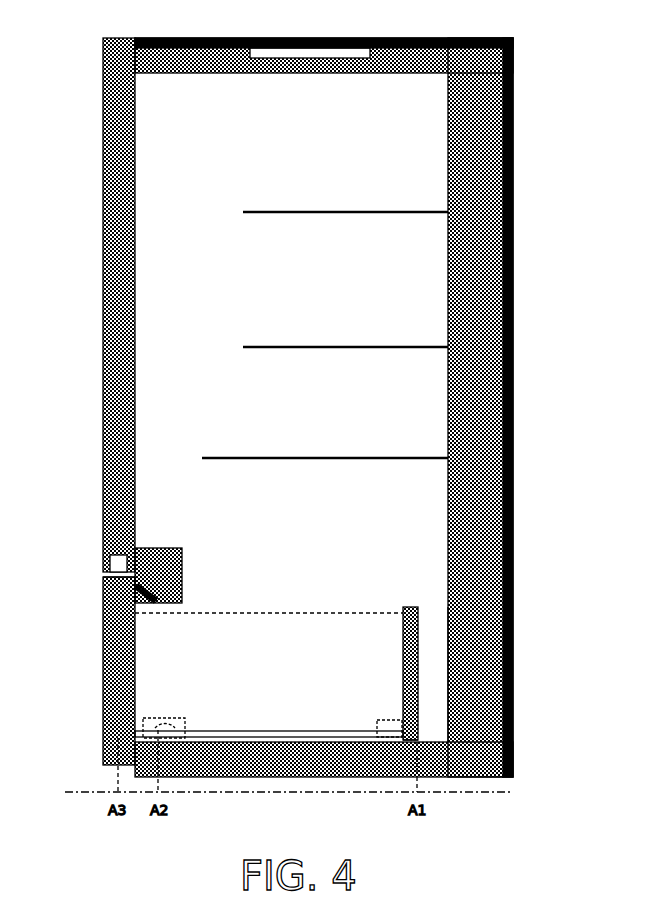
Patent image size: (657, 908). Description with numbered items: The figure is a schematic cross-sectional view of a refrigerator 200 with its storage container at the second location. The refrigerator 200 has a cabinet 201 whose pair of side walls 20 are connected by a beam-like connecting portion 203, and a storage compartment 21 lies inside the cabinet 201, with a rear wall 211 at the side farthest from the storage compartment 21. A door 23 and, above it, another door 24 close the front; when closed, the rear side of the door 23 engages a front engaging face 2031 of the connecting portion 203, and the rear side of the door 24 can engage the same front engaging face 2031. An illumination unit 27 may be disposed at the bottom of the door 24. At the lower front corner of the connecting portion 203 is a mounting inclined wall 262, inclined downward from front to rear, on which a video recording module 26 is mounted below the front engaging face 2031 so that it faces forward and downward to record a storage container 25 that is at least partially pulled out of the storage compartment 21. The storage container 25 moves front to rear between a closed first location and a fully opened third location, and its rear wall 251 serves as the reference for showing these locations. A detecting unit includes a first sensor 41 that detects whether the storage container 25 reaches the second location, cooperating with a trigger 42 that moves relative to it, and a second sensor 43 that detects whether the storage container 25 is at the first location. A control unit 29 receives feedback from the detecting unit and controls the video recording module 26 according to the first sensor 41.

The refrigerator 200 is at (331, 397).
The control unit 29 is at (356, 48).
The cabinet 201 is at (490, 207).
The rear wall 211 is at (513, 380).
The door 24 is at (108, 370).
The door 23 is at (108, 698).
The illumination unit 27 is at (108, 568).
The front engaging face 2031 is at (132, 586).
The mounting inclined wall 262 is at (146, 590).
The video recording module 26 is at (158, 597).
The connecting portion 203 is at (190, 560).
The storage compartment 21 is at (325, 385).
The storage container 25 is at (290, 630).
The rear wall of storage container 251 is at (405, 663).
The side walls 20 is at (428, 633).
The trigger 42 is at (413, 735).
The second sensor 43 is at (380, 733).
The first sensor 41 is at (170, 718).